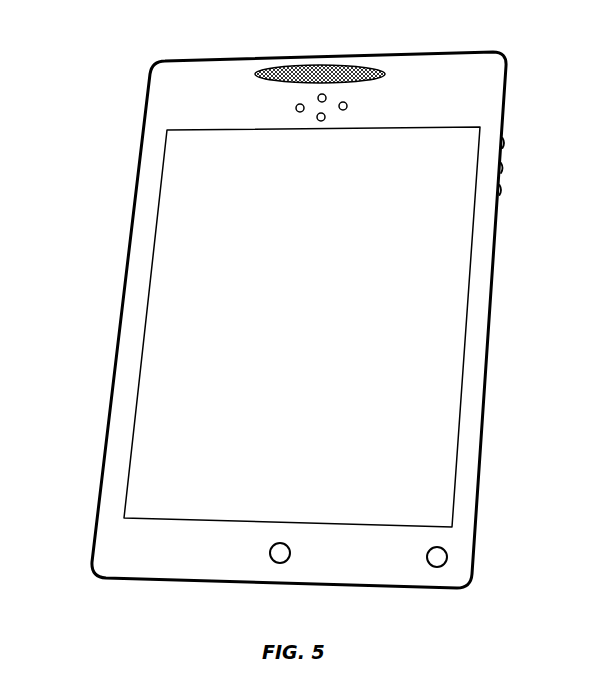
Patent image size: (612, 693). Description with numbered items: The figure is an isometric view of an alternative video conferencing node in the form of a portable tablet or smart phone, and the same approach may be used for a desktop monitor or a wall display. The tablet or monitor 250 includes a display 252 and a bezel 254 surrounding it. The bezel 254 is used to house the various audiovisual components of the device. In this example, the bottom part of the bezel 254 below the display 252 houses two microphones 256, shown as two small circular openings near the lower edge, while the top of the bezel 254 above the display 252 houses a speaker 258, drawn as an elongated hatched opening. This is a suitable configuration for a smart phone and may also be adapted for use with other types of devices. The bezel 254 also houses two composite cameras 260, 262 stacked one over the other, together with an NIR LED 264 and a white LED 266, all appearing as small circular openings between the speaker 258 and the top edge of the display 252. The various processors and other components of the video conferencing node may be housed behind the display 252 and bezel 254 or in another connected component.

The tablet or monitor 250 is at (280, 317).
The display 252 is at (305, 427).
The bezel 254 is at (473, 372).
The microphones 256 is at (278, 564).
The speaker 258 is at (337, 66).
The composite camera 260 is at (321, 122).
The composite camera 262 is at (327, 97).
The NIR LED 264 is at (345, 111).
The white LED 266 is at (296, 108).